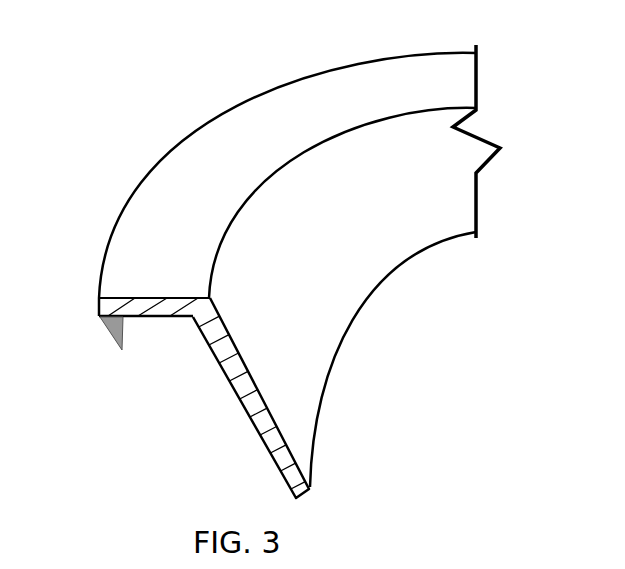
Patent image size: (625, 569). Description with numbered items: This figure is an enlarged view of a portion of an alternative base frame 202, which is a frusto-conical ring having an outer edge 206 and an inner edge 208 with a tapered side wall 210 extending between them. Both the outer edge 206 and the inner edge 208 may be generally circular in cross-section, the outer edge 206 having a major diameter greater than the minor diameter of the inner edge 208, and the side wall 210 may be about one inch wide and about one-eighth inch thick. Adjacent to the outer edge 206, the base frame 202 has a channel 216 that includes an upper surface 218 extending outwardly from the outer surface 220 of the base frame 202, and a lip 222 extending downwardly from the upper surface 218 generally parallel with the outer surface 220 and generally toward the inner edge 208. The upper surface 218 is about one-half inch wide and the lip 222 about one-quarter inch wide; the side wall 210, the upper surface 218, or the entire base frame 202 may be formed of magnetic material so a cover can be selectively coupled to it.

The base frame 202 is at (132, 110).
The upper surface 218 is at (352, 90).
The tapered side wall 210 is at (438, 182).
The inner edge 208 is at (373, 292).
The outer edge 206 is at (97, 302).
The lip 222 is at (112, 335).
The channel 216 is at (155, 337).
The outer surface 220 is at (244, 407).